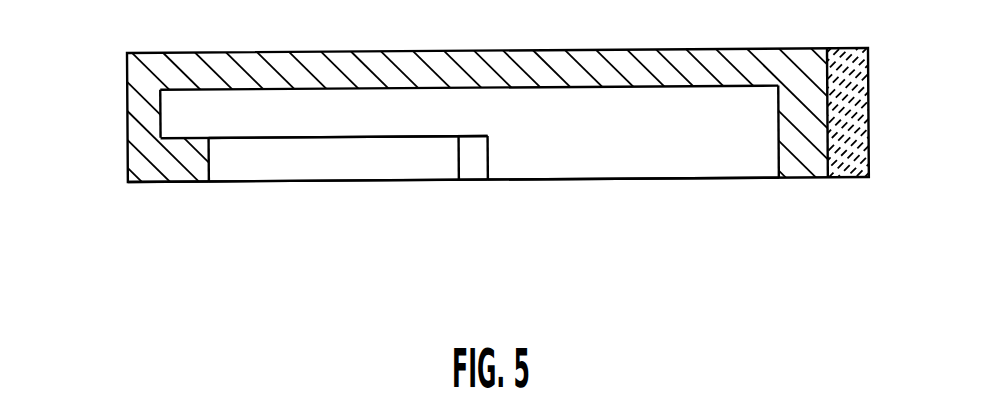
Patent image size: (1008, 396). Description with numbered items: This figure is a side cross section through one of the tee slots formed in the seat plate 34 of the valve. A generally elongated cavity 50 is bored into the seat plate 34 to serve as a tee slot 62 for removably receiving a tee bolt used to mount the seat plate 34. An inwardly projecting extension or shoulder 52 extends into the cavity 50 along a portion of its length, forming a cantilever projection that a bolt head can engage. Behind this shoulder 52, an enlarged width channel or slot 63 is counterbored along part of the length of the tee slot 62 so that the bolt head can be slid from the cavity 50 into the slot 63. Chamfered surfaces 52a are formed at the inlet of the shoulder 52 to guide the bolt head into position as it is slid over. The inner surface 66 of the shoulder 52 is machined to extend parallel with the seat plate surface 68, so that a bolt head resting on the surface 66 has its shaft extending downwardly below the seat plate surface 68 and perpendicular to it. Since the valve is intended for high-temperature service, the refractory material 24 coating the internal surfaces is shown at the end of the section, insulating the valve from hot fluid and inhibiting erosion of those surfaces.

The refractory material 24 is at (857, 177).
The seat plate 34 is at (127, 92).
The cavity 50 is at (637, 144).
The shoulder 52 is at (308, 182).
The chamfered surface 52a is at (477, 168).
The tee slot 62 is at (650, 178).
The enlarged width channel 63 is at (293, 105).
The inner surface 66 is at (408, 138).
The seat plate surface 68 is at (168, 182).